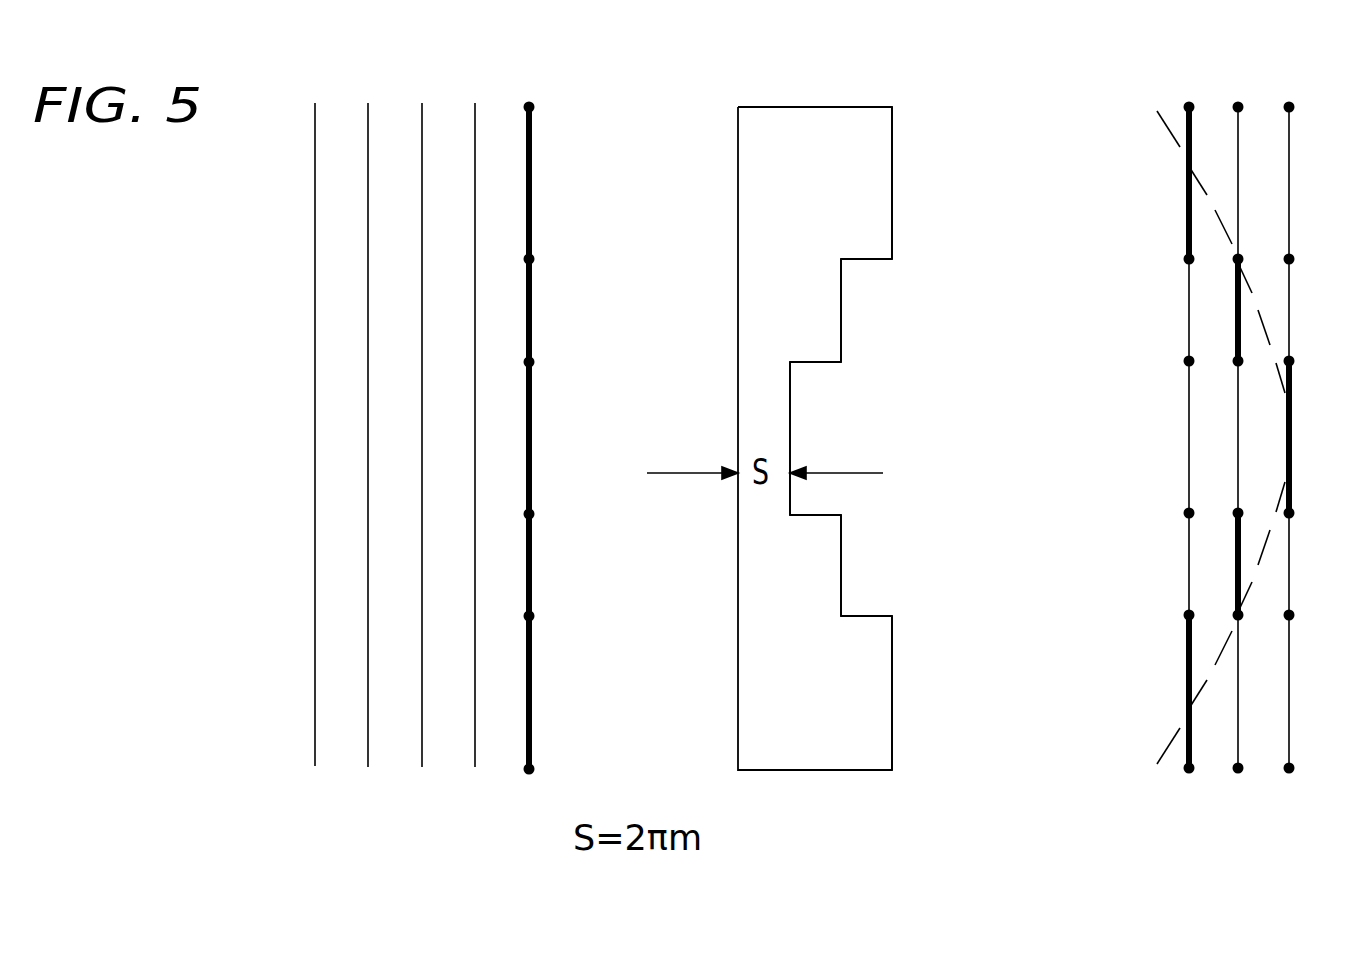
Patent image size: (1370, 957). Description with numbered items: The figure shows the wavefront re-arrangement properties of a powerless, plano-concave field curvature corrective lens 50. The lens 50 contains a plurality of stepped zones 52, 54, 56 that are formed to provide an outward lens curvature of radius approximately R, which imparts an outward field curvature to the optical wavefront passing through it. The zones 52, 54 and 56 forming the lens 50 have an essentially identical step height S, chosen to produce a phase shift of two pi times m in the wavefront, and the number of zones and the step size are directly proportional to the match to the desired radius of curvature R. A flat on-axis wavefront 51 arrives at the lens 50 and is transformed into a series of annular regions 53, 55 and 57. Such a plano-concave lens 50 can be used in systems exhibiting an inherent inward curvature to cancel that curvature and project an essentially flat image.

The plano-concave lens 50 is at (805, 748).
The flat on-axis wavefront 51 is at (527, 772).
The zone 52 is at (792, 413).
The annular region 53 is at (532, 448).
The zone 54 is at (843, 312).
The annular region 55 is at (532, 310).
The zone 56 is at (894, 188).
The annular region 57 is at (532, 188).